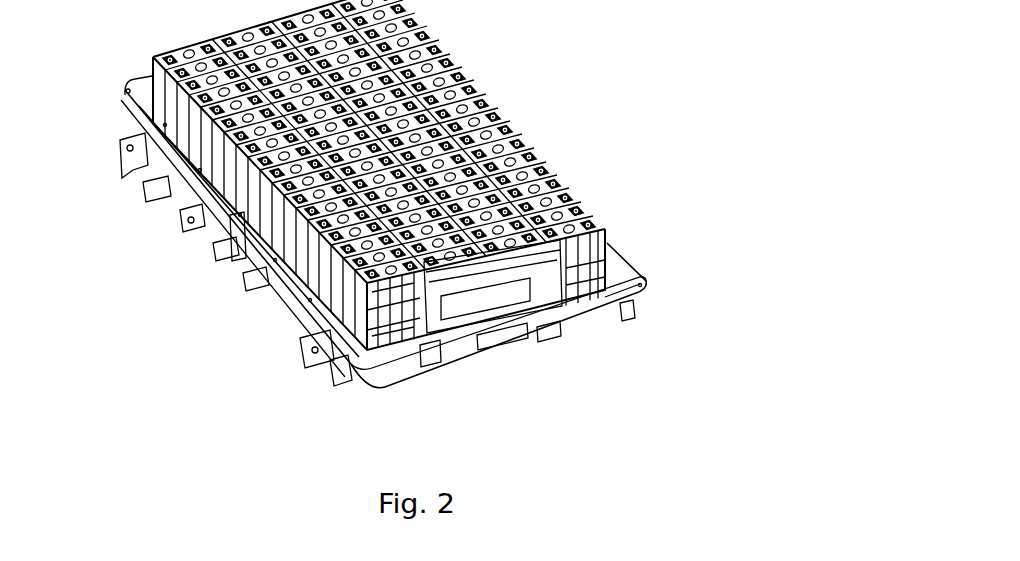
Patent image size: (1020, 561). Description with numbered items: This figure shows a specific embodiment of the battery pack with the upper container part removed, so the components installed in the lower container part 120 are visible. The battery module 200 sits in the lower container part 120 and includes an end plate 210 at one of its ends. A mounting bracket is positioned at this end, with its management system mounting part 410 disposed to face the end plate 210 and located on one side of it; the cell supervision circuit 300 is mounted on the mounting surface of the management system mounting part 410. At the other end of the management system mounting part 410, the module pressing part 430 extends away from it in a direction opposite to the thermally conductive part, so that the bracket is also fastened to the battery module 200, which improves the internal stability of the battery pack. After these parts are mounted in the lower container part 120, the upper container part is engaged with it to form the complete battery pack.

The battery module 200 is at (533, 138).
The module pressing part 430 is at (538, 206).
The end plate 210 is at (608, 247).
The cell supervision circuit 300 is at (543, 298).
The management system mounting part 410 is at (456, 300).
The lower container part 120 is at (268, 288).